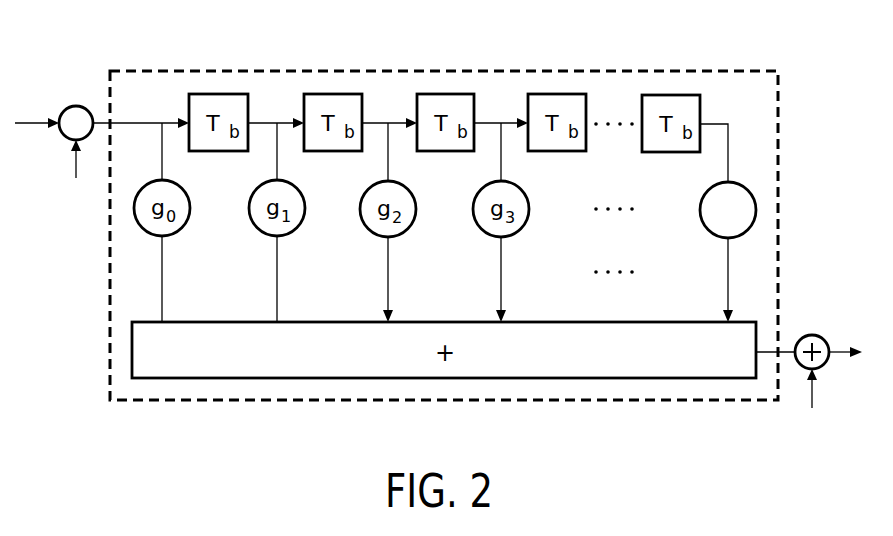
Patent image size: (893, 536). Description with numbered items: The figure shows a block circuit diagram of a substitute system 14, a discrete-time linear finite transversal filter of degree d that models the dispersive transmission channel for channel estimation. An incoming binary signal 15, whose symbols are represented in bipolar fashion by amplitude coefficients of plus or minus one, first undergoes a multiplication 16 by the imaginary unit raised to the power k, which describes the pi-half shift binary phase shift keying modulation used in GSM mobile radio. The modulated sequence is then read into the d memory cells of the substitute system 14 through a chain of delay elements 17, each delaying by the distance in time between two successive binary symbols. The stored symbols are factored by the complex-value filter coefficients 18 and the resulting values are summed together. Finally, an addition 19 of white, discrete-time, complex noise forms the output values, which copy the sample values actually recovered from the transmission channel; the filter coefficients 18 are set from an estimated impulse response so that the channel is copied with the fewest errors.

The substitute system 14 is at (158, 70).
The binary signal 15 is at (25, 118).
The multiplication 16 is at (76, 104).
The delay elements 17 is at (682, 95).
The filter coefficients 18 is at (757, 212).
The addition 19 is at (812, 334).